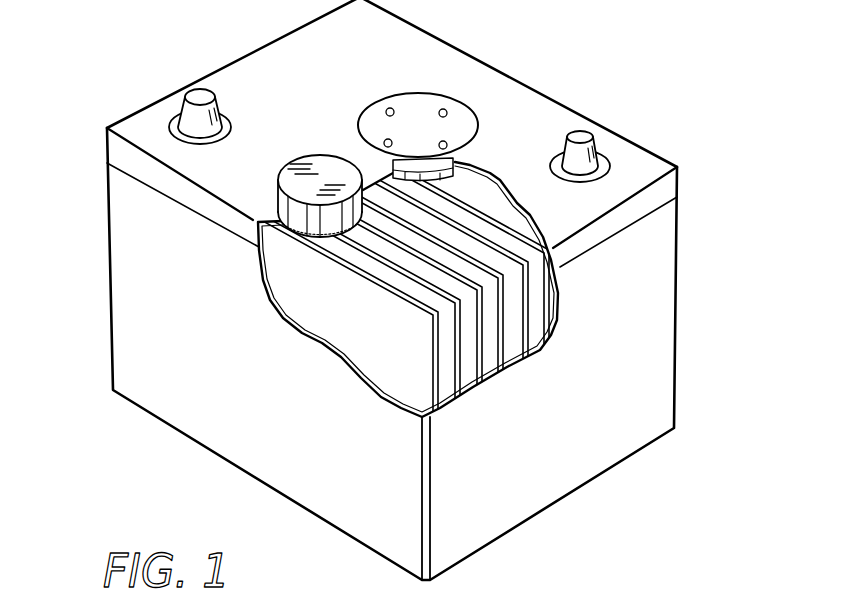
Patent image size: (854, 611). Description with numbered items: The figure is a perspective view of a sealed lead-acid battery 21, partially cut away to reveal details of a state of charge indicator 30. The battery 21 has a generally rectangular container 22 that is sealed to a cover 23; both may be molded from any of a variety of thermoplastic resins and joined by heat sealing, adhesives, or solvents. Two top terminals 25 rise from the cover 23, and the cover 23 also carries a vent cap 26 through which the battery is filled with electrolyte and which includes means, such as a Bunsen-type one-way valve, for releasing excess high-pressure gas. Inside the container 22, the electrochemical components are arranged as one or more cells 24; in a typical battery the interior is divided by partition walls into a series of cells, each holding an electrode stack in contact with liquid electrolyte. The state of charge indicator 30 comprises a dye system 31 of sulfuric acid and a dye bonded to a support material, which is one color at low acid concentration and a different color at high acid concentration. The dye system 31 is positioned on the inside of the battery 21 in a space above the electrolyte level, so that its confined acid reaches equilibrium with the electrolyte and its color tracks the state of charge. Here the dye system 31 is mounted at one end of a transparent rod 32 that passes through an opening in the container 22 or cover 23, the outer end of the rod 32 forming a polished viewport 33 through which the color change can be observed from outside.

The sealed lead-acid battery 21 is at (405, 290).
The container 22 is at (665, 332).
The cover 23 is at (662, 163).
The cells 24 is at (398, 348).
The terminal posts 25 is at (180, 105).
The vent cap 26 is at (425, 141).
The state of charge indicator 30 is at (298, 218).
The dye system 31 is at (302, 240).
The transparent rod 32 is at (284, 216).
The polished viewport 33 is at (294, 156).